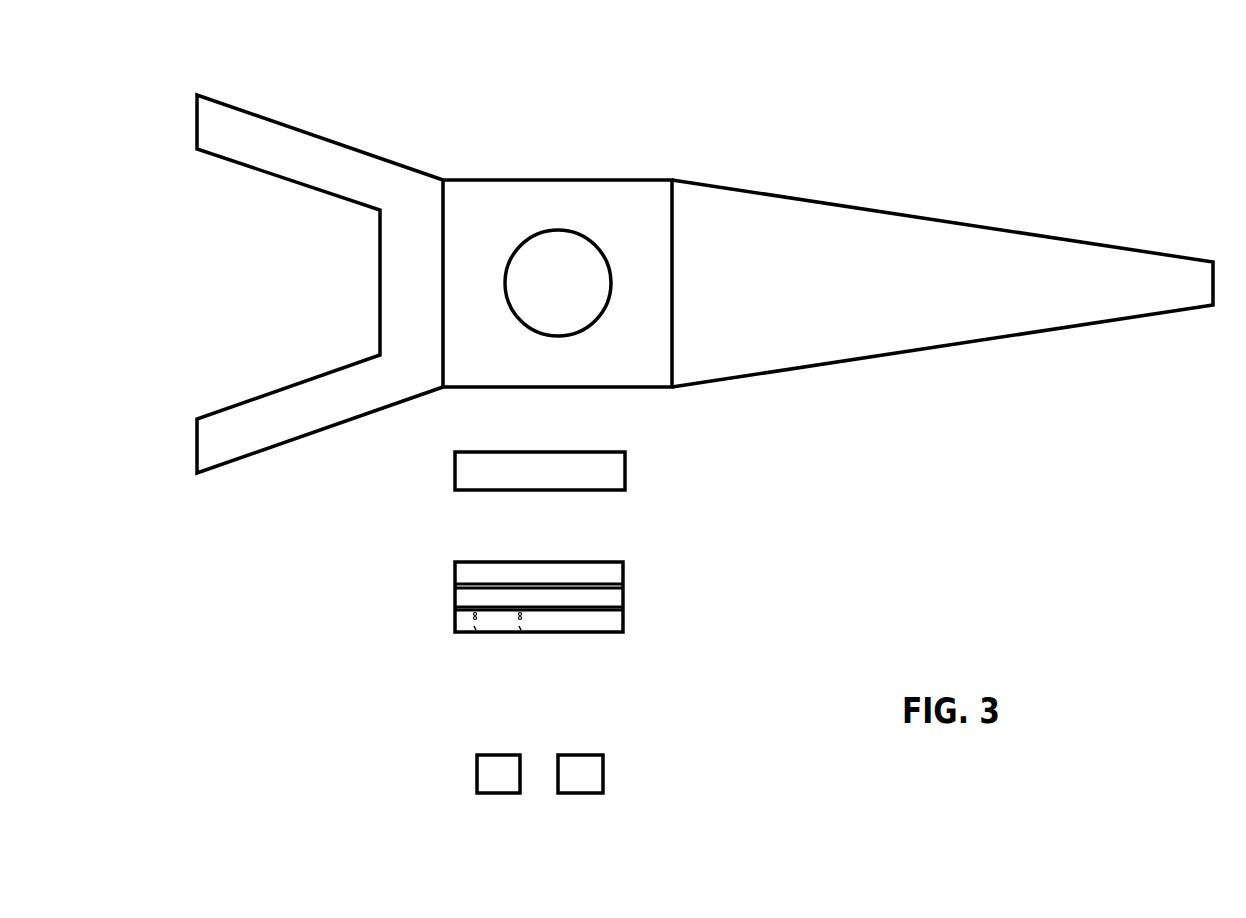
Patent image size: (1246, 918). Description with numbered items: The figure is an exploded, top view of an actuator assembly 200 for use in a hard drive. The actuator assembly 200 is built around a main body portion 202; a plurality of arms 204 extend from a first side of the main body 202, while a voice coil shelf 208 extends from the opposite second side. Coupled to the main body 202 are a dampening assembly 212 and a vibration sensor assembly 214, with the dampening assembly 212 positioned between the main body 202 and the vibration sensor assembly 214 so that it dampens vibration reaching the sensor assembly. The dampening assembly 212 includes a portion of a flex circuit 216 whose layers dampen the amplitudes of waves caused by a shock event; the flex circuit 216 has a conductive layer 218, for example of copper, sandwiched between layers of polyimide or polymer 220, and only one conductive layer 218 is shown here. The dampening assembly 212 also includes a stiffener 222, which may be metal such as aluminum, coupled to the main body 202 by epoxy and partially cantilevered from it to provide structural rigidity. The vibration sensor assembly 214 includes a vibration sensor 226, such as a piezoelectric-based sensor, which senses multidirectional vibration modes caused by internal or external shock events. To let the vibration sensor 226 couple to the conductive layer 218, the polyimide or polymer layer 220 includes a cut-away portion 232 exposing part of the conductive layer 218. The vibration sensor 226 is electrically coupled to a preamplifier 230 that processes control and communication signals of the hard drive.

The actuator assembly 200 is at (372, 44).
The main body portion 202 is at (620, 195).
The arms 204 is at (1117, 255).
The voice coil shelf 208 is at (210, 428).
The dampening assembly 212 is at (320, 543).
The vibration sensor assembly 214 is at (347, 783).
The flex circuit 216 is at (447, 630).
The conductive layer 218 is at (607, 602).
The polyimide or polymer layers 220 is at (612, 570).
The stiffener 222 is at (465, 473).
The vibration sensor 226 is at (484, 770).
The preamplifier 230 is at (595, 778).
The cut-away portion 232 is at (475, 627).